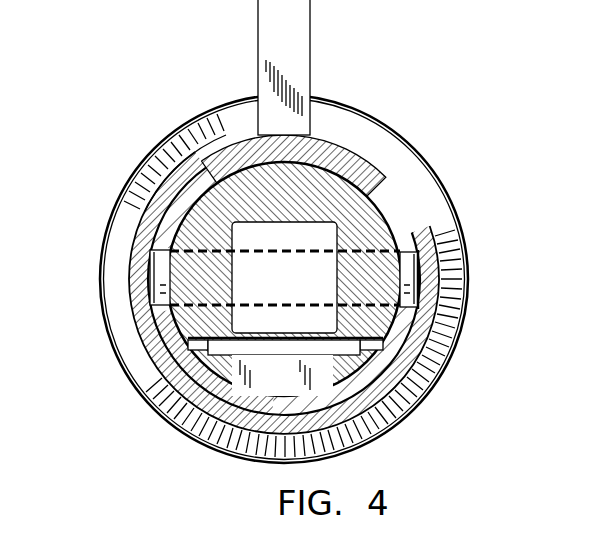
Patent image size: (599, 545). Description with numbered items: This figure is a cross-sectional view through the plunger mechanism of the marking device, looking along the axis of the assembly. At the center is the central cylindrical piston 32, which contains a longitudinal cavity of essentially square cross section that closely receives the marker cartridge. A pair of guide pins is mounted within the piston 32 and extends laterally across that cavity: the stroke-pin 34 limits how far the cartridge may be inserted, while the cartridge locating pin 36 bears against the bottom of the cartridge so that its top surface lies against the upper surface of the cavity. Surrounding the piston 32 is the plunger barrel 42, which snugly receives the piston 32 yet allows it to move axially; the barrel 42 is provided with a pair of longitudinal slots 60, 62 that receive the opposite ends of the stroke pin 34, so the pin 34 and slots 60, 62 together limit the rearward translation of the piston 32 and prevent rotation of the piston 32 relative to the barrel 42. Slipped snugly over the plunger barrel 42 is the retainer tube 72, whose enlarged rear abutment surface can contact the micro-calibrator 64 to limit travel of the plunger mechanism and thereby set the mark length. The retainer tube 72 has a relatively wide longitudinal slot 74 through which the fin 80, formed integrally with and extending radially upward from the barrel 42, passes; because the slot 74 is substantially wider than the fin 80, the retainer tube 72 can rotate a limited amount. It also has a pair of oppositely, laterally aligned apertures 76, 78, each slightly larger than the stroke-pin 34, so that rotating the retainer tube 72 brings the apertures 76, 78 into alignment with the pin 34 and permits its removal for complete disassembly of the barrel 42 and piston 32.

The central cylindrical piston 32 is at (368, 133).
The stroke-pin 34 is at (420, 277).
The cartridge locating pin 36 is at (190, 367).
The plunger barrel 42 is at (378, 157).
The longitudinal slot 60 is at (440, 252).
The longitudinal slot 62 is at (150, 257).
The micro-calibrator 64 is at (433, 382).
The retainer tube 72 is at (347, 437).
The longitudinal slot 74 is at (373, 127).
The aperture 76 is at (450, 360).
The aperture 78 is at (150, 185).
The fin 80 is at (303, 42).